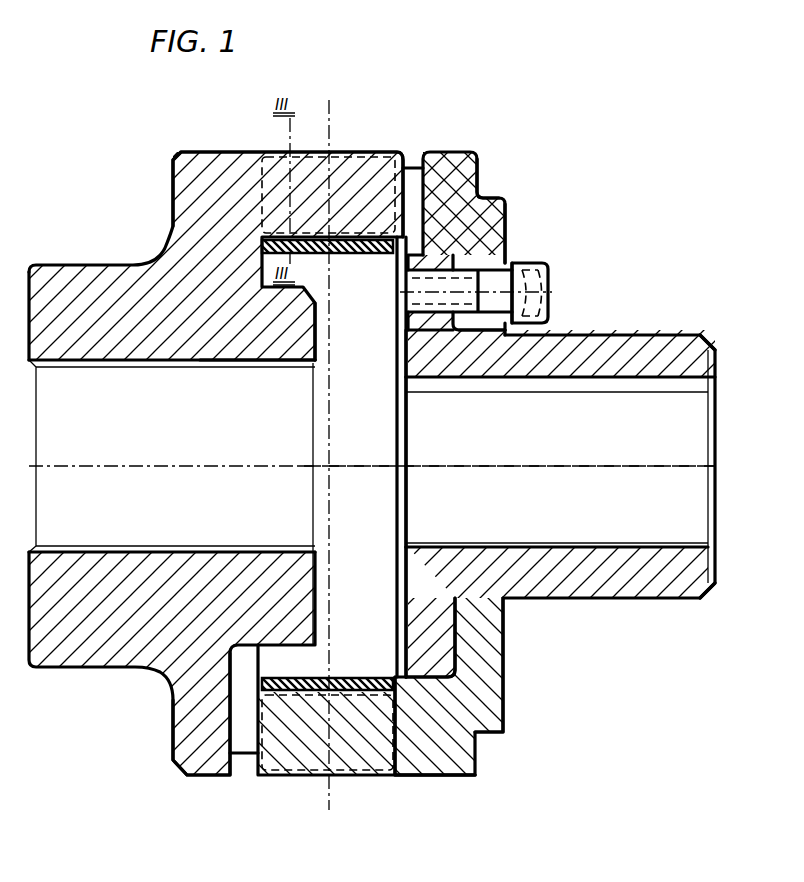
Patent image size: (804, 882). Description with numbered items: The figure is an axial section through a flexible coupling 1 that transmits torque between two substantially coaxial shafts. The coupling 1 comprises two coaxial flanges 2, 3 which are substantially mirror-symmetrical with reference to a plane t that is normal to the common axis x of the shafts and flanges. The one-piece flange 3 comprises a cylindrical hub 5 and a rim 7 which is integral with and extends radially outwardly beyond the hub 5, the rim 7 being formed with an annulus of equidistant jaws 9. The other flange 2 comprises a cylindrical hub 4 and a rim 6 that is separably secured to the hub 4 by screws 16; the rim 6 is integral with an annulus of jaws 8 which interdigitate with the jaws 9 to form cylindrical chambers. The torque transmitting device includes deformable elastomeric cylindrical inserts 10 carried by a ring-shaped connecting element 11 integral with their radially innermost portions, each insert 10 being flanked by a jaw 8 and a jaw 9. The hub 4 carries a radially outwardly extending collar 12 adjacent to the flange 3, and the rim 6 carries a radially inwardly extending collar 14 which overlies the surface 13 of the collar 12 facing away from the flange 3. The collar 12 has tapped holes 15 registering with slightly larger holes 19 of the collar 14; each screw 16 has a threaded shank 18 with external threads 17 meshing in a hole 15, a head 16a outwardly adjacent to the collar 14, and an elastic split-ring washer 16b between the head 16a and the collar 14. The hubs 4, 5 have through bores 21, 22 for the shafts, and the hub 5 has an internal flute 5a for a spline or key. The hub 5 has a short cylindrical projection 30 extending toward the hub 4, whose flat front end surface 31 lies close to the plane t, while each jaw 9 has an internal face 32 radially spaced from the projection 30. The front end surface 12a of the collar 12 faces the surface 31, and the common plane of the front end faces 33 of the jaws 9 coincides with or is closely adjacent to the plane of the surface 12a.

The flexible coupling 1 is at (619, 295).
The flange 2 is at (638, 334).
The flange 3 is at (49, 266).
The hub 4 is at (672, 333).
The hub 5 is at (94, 276).
The internal flute 5a is at (64, 372).
The rim 6 is at (505, 213).
The rim 7 is at (173, 190).
The jaws 8 is at (261, 778).
The jaws 9 is at (395, 155).
The cylindrical inserts 10 is at (363, 790).
The ring-shaped connecting element 11 is at (354, 677).
The collar 12 is at (428, 622).
The front end surface 12a is at (403, 479).
The surface of the collar 13 is at (458, 640).
The collar 14 is at (488, 619).
The tapped holes 15 is at (480, 234).
The screws 16 is at (548, 271).
The head 16a is at (548, 322).
The elastic washer 16b is at (512, 263).
The external threads 17 is at (438, 252).
The threaded shank 18 is at (471, 305).
The holes 19 is at (490, 332).
The through bore 21 is at (682, 525).
The through bore 22 is at (86, 533).
The cylindrical projection 30 is at (288, 356).
The front end surface 31 is at (317, 324).
The internal face 32 is at (374, 250).
The front end faces 33 is at (403, 200).
The common axis x is at (637, 466).
The symmetry plane t is at (335, 105).